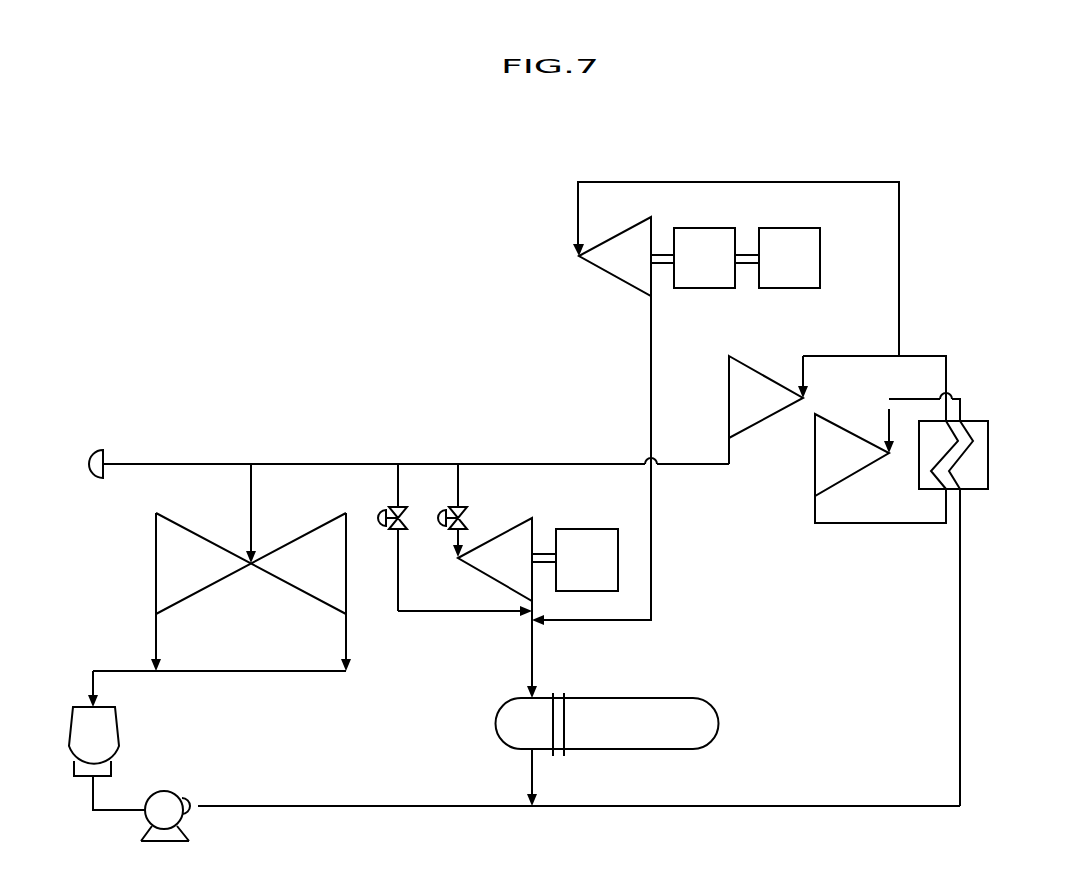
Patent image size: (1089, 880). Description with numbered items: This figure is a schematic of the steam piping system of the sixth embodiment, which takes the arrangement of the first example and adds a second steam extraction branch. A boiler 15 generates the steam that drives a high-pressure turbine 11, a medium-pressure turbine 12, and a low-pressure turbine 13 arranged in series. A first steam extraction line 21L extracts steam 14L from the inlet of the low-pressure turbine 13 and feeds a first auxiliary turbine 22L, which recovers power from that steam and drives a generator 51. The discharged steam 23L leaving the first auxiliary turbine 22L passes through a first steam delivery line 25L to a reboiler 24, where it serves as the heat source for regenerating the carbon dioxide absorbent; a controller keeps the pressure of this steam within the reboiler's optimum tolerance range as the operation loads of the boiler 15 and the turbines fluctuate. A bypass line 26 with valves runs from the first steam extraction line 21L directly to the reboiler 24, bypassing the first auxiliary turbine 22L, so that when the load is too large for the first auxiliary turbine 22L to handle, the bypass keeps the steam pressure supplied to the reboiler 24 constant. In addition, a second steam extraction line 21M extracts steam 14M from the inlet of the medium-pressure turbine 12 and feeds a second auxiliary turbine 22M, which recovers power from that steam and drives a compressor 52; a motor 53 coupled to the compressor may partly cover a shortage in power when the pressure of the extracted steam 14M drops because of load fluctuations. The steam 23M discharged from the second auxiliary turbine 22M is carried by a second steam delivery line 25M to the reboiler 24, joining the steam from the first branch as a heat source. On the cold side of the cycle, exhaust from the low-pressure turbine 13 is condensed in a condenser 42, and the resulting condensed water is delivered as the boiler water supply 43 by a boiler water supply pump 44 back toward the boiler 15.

The high-pressure turbine 11 is at (849, 492).
The medium-pressure turbine 12 is at (764, 440).
The low-pressure turbine 13 is at (212, 522).
The steam 14L is at (555, 450).
The steam 14M is at (772, 170).
The boiler 15 is at (975, 420).
The first steam extraction line 21L is at (455, 485).
The second steam extraction line 21M is at (903, 258).
The first auxiliary turbine 22L is at (494, 519).
The second auxiliary turbine 22M is at (616, 226).
The discharged steam 23L is at (543, 667).
The steam 23M is at (662, 375).
The reboiler 24 is at (684, 697).
The first steam delivery line 25L is at (528, 650).
The second steam delivery line 25M is at (648, 368).
The bypass line 26 is at (400, 590).
The condenser 42 is at (118, 727).
The boiler water supply 43 is at (232, 818).
The boiler water supply pump 44 is at (178, 793).
The generator 51 is at (583, 528).
The compressor 52 is at (727, 227).
The motor 53 is at (800, 227).